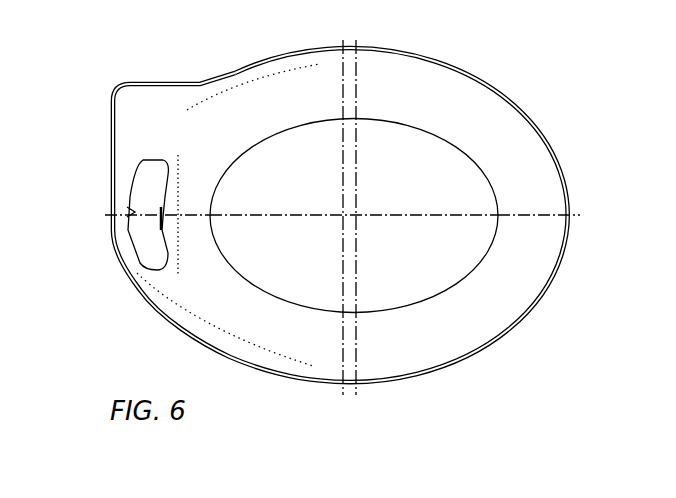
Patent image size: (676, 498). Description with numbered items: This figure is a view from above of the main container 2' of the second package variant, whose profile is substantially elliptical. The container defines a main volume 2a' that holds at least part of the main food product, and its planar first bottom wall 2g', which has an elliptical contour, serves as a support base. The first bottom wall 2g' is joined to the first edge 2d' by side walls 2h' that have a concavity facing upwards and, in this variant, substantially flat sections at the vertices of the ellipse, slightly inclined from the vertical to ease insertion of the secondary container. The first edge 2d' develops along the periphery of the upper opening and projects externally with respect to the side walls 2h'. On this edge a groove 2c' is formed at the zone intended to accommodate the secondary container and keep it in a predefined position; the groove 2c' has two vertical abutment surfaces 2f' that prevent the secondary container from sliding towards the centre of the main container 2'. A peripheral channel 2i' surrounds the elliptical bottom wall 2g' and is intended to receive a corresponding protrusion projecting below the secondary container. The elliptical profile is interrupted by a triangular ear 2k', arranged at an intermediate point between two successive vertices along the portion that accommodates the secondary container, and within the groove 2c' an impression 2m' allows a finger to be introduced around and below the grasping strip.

The main container 2' is at (401, 205).
The main volume 2a' is at (418, 203).
The groove 2c' is at (194, 319).
The first edge 2d' is at (253, 64).
The vertical abutment surfaces 2f' is at (317, 220).
The first bottom wall 2g' is at (362, 307).
The side walls 2h' is at (260, 113).
The peripheral channel 2i' is at (560, 262).
The triangular ear 2k' is at (216, 203).
The impression 2m' is at (112, 215).